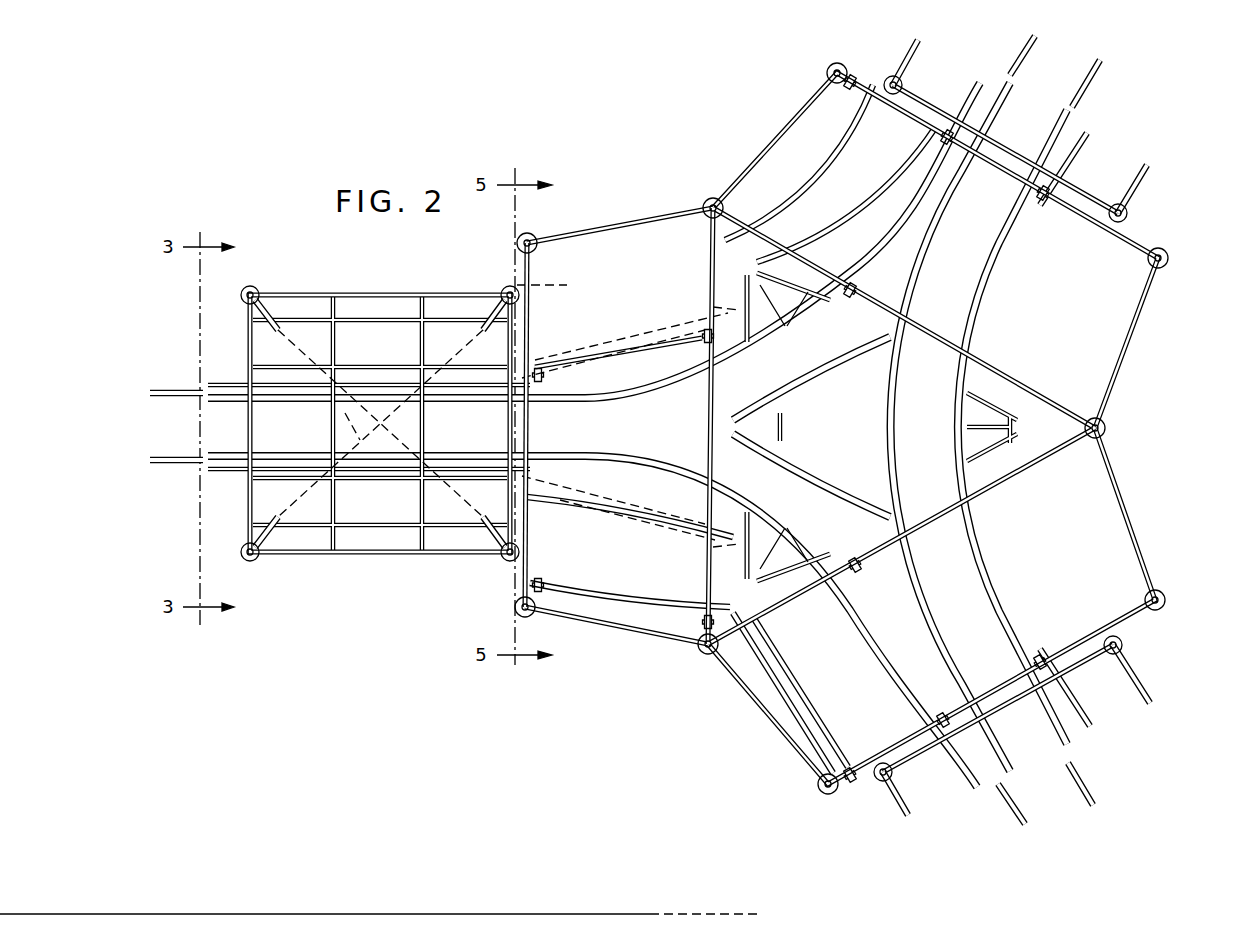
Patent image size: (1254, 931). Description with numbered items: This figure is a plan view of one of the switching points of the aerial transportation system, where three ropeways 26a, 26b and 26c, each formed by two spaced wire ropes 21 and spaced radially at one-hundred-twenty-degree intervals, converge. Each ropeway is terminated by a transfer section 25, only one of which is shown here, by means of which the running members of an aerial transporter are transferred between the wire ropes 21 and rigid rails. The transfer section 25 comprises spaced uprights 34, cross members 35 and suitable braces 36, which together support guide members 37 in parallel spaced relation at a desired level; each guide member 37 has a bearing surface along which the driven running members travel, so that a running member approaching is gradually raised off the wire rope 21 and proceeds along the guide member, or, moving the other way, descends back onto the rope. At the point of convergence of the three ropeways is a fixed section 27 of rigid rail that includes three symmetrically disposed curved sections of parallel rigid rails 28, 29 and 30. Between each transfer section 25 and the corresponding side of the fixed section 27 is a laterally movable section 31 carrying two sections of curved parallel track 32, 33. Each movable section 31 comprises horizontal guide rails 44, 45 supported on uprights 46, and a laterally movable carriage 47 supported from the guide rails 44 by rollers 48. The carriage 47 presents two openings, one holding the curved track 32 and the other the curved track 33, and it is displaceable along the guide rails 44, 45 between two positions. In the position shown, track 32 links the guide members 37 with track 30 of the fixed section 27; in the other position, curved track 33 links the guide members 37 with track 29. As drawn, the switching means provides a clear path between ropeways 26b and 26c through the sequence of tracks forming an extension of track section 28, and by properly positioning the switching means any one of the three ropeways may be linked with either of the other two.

The wire ropes 21 is at (171, 455).
The transfer section 25 is at (340, 288).
The ropeway 26a is at (172, 385).
The ropeway 26b is at (1105, 79).
The ropeway 26c is at (1085, 808).
The fixed section of rigid rail 27 is at (865, 427).
The curved section of parallel rigid rails 28 is at (952, 418).
The curved section of parallel rigid rails 29 is at (800, 522).
The curved section of parallel rigid rails 30 is at (798, 386).
The laterally movable section 31 is at (1155, 516).
The curved track 32 is at (992, 234).
The curved track 33 is at (848, 152).
The uprights 34 is at (905, 82).
The cross members 35 is at (908, 56).
The braces 36 is at (376, 322).
The guide members 37 is at (1003, 109).
The horizontal guide rail 44 is at (533, 322).
The horizontal guide rail 45 is at (708, 256).
The uprights 46 is at (837, 62).
The laterally movable carriage 47 is at (622, 342).
The rollers 48 is at (847, 89).